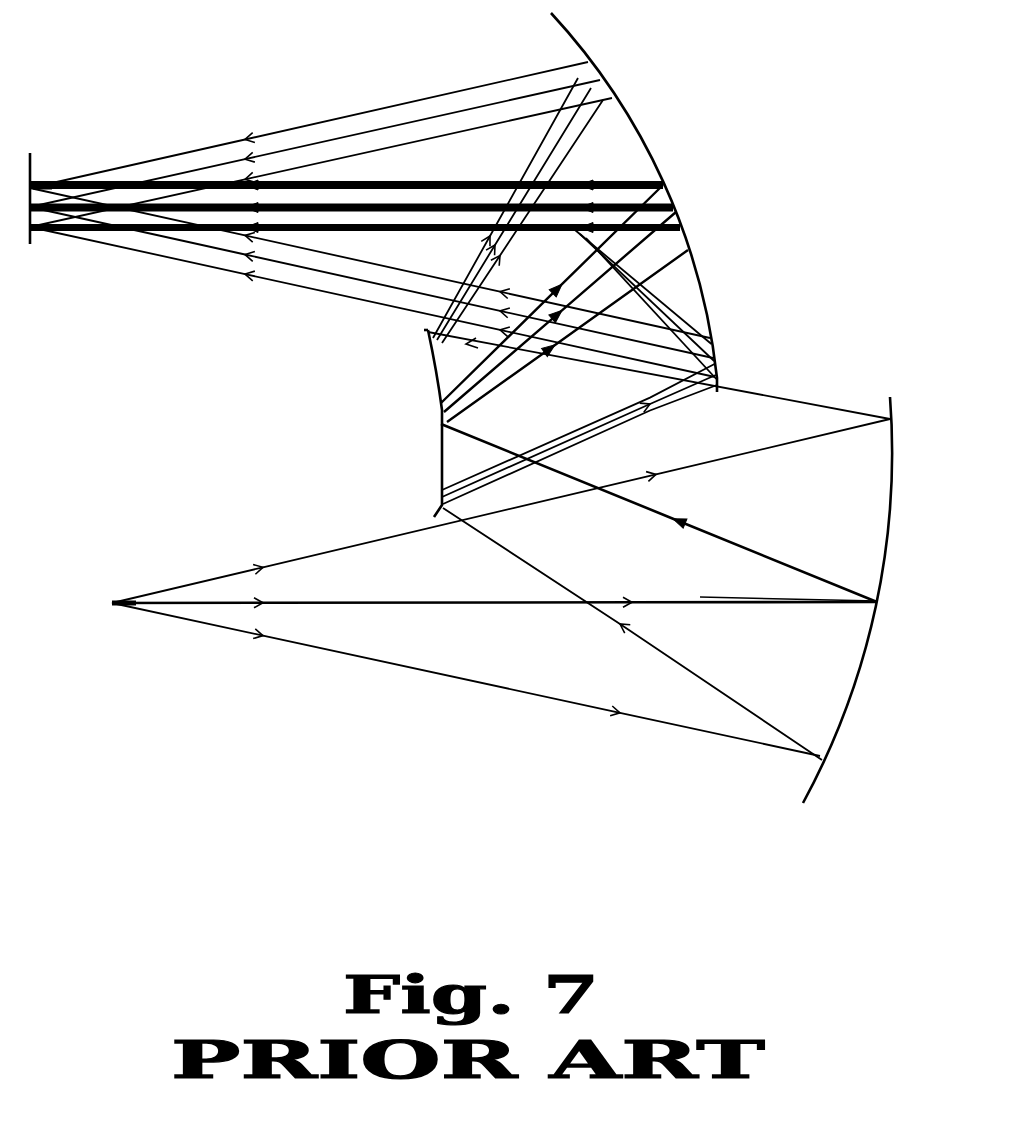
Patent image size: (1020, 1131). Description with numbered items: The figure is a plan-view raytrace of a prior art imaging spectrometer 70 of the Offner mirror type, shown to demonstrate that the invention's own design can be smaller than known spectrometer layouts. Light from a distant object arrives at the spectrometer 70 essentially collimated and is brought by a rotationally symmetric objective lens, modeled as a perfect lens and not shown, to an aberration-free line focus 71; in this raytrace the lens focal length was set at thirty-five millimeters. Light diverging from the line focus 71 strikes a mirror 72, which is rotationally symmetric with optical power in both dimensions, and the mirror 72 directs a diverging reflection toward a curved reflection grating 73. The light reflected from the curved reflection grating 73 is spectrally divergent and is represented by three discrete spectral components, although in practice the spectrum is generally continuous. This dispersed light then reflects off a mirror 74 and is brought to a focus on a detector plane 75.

The spectrometer 70 is at (108, 77).
The line focus 71 is at (108, 583).
The mirror 72 is at (806, 806).
The curved reflection grating 73 is at (438, 467).
The mirror 74 is at (641, 124).
The detector plane 75 is at (34, 239).